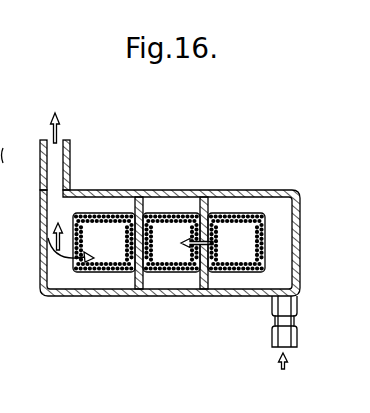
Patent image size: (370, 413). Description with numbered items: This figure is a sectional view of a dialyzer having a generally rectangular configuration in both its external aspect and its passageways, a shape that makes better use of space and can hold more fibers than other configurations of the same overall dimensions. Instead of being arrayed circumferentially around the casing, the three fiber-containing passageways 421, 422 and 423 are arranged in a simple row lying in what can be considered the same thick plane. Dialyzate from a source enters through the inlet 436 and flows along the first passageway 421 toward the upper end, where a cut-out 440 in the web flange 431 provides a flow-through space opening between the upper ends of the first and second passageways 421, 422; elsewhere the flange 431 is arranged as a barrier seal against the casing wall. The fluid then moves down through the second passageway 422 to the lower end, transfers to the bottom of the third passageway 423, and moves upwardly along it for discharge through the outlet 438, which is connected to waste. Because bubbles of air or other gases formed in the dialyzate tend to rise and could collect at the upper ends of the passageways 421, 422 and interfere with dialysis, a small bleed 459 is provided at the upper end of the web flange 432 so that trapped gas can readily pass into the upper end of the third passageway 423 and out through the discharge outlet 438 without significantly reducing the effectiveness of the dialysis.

The discharge outlet 438 is at (68, 150).
The bleed 459 is at (119, 243).
The web flange 432 is at (141, 212).
The web flange 431 is at (210, 208).
The cut-out 440 is at (225, 214).
The fiber-containing passageway 423 is at (108, 261).
The fiber-containing passageway 422 is at (173, 248).
The fiber-containing passageway 421 is at (234, 247).
The inlet 436 is at (277, 334).